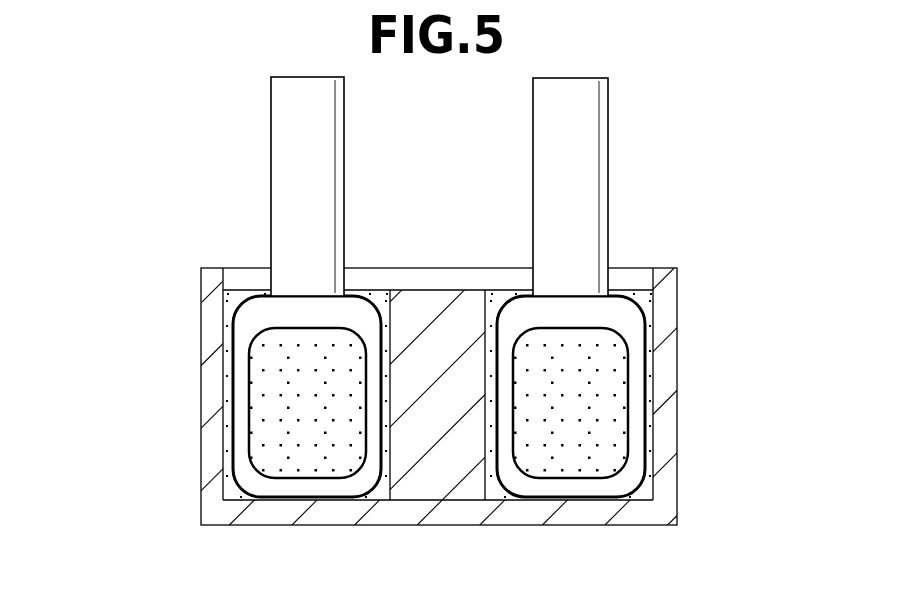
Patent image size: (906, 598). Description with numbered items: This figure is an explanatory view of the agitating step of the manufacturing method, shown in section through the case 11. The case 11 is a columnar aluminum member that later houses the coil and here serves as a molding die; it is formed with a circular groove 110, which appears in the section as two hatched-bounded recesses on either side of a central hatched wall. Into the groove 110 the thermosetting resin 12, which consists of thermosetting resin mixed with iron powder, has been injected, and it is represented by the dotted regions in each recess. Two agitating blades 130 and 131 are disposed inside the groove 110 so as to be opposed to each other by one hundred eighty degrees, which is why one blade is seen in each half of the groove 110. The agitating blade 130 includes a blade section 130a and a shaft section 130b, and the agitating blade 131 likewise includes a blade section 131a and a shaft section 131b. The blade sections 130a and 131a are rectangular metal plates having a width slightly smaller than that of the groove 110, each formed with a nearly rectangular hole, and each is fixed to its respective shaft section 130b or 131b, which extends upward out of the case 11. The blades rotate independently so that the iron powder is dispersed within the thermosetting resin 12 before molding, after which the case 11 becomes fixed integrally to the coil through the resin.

The case 11 is at (677, 373).
The groove 110 is at (645, 347).
The thermosetting resin 12 is at (278, 405).
The agitating blade 130 is at (245, 320).
The blade section 130a is at (243, 367).
The shaft section 130b is at (283, 175).
The agitating blade 131 is at (627, 308).
The blade section 131a is at (628, 322).
The shaft section 131b is at (577, 158).